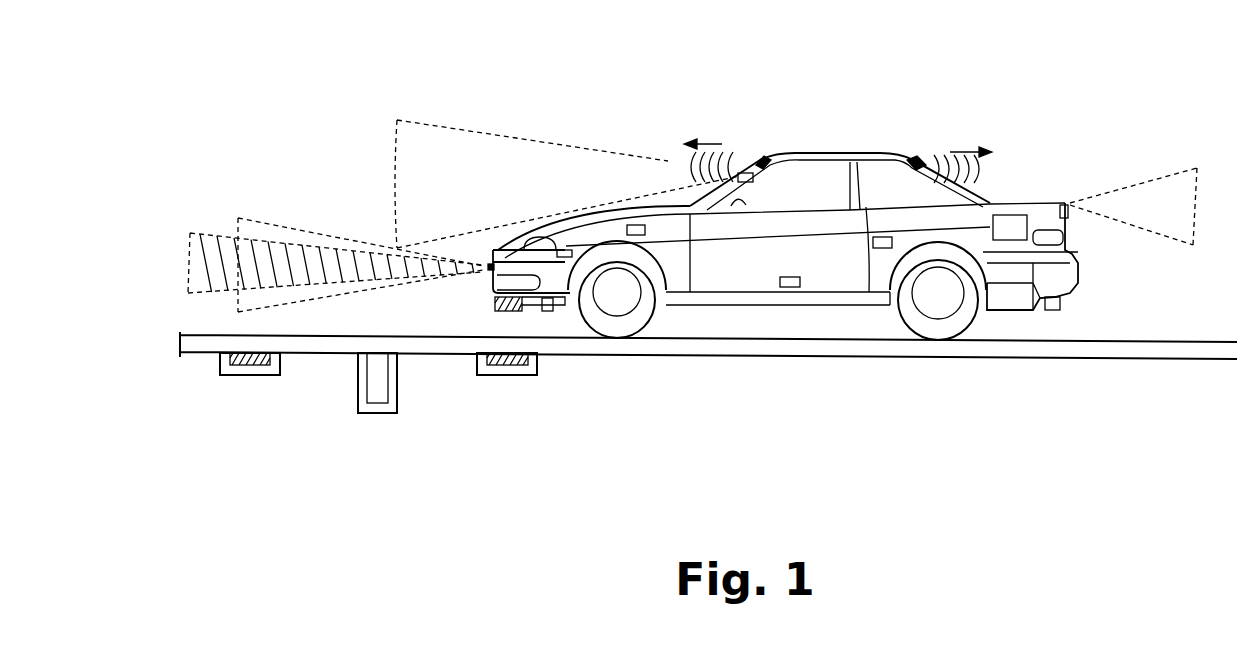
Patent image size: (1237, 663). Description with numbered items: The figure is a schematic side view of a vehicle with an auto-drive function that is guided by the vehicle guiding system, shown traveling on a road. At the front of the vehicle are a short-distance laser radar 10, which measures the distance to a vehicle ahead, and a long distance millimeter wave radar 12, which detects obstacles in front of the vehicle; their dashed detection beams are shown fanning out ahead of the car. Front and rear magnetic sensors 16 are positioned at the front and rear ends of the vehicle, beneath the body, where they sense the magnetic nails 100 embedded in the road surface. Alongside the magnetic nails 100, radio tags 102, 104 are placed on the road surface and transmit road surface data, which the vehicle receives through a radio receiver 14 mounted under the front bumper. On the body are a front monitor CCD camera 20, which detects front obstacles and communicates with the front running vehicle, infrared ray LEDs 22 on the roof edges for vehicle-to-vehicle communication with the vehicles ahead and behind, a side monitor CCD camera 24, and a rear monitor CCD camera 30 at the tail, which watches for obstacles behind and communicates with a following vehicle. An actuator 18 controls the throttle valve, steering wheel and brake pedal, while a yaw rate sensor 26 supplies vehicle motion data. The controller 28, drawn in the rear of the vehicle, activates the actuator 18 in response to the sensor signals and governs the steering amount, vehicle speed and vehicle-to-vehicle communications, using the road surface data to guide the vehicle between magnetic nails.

The short-distance laser radar 10 is at (483, 276).
The long distance millimeter wave radar 12 is at (490, 265).
The radio receiver 14 is at (500, 311).
The front and rear magnetic sensors 16 is at (547, 312).
The actuator 18 is at (628, 225).
The front monitor CCD camera 20 is at (751, 171).
The infrared ray LED 22 is at (762, 160).
The side monitor CCD camera 24 is at (877, 248).
The yaw rate sensor 26 is at (780, 283).
The controller 28 is at (1020, 215).
The rear monitor CCD camera 30 is at (1069, 201).
The magnetic nails 100 is at (382, 413).
The radio tag 102 is at (513, 377).
The radio tag 104 is at (252, 371).